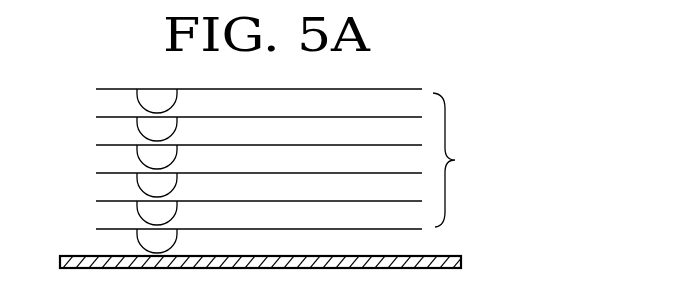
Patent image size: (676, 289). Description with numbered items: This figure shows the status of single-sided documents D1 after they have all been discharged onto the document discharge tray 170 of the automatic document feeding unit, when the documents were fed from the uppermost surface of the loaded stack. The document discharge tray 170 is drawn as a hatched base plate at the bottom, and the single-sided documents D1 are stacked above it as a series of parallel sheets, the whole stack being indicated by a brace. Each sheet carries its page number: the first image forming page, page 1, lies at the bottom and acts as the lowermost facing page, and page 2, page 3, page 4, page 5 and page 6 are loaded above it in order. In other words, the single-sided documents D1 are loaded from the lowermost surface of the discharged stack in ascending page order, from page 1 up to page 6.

The page 1 is at (157, 241).
The page 2 is at (157, 213).
The page 3 is at (157, 185).
The page 4 is at (157, 157).
The page 5 is at (157, 129).
The page 6 is at (157, 101).
The single-sided documents D1 is at (461, 160).
The document discharge tray 170 is at (462, 259).